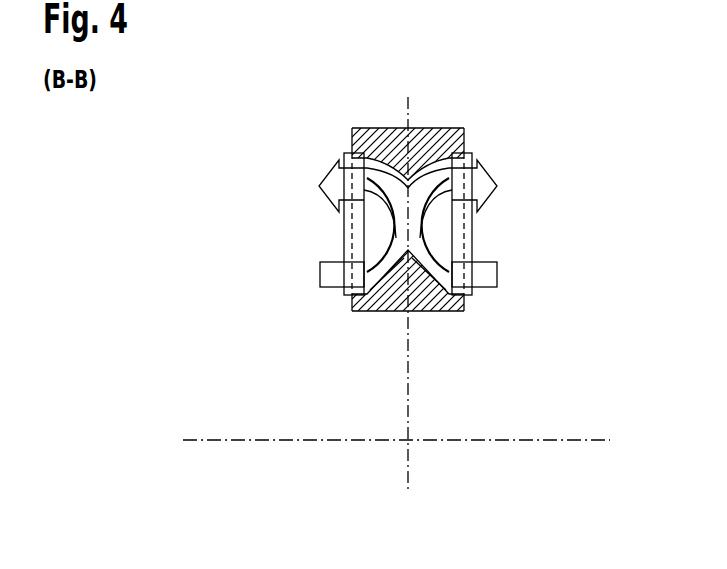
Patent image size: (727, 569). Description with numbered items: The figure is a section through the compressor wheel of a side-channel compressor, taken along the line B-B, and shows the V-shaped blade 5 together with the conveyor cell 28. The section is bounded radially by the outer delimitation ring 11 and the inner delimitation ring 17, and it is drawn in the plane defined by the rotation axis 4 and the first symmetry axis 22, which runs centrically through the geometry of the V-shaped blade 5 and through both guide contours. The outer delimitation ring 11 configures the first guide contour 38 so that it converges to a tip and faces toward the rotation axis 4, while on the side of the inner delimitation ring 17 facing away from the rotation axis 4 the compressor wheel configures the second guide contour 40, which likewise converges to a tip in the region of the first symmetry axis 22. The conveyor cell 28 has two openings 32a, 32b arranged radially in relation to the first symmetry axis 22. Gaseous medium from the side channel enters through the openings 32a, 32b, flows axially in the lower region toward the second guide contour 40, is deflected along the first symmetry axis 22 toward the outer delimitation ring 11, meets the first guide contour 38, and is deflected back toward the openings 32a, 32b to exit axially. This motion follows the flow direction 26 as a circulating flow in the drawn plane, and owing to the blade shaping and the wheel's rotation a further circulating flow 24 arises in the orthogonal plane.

The rotation axis 4 is at (276, 440).
The V-shaped blade 5 is at (212, 135).
The outer delimitation ring 11 is at (438, 138).
The inner delimitation ring 17 is at (382, 311).
The first symmetry axis 22 is at (409, 398).
The circulating flow 24 is at (320, 273).
The flow direction 26 is at (497, 273).
The conveyor cell 28 is at (345, 165).
The opening 32a is at (332, 211).
The opening 32b is at (482, 211).
The first guide contour 38 is at (416, 170).
The second guide contour 40 is at (345, 248).